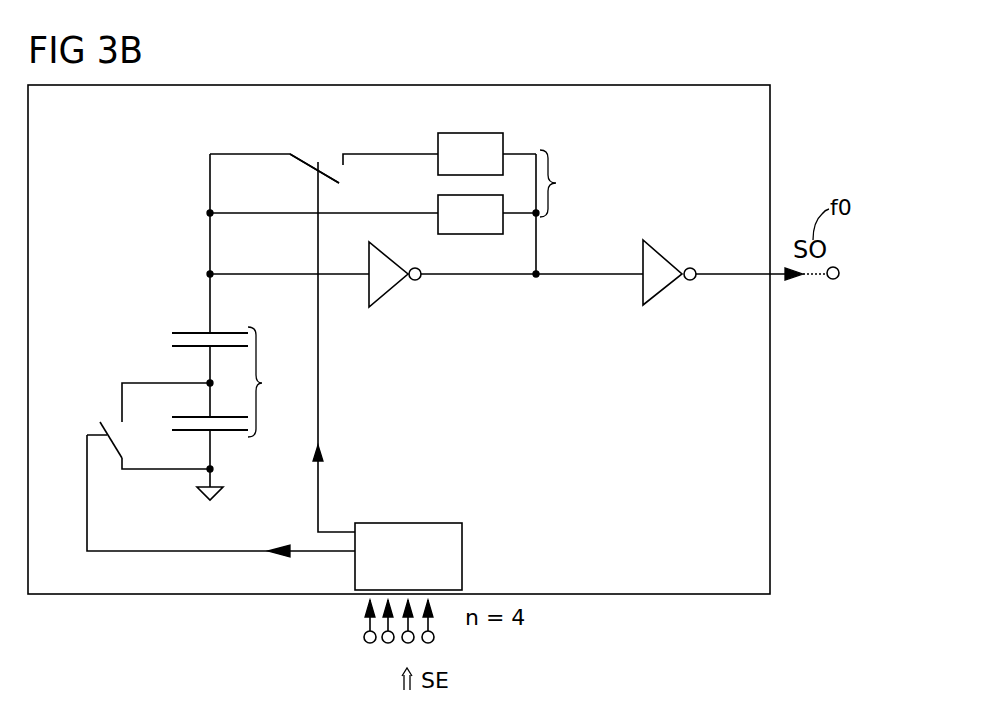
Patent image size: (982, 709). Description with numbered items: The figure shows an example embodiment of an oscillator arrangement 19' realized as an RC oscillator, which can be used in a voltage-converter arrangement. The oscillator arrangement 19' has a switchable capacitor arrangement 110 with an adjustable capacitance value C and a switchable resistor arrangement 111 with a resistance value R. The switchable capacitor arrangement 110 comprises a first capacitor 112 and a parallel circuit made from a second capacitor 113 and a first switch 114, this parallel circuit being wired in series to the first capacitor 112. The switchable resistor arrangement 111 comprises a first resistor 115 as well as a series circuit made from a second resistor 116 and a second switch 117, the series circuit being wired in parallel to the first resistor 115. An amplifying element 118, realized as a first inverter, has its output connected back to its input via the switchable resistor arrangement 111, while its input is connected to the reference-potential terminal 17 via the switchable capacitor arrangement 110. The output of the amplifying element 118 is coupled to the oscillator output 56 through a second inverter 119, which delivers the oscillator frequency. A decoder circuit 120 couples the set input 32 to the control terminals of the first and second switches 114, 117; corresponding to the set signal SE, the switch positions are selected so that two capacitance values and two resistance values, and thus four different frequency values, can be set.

The reference-potential terminal 17 is at (216, 484).
The oscillator arrangement 19' is at (399, 361).
The set input 32 is at (358, 607).
The oscillator output 56 is at (832, 280).
The switchable capacitor arrangement 110 is at (222, 366).
The switchable resistor arrangement 111 is at (629, 187).
The first capacitor 112 is at (188, 331).
The second capacitor 113 is at (190, 417).
The first switch 114 is at (86, 435).
The first resistor 115 is at (438, 210).
The second resistor 116 is at (445, 135).
The second switch 117 is at (314, 174).
The amplifying element 118 is at (387, 297).
The second inverter 119 is at (662, 292).
The decoder circuit 120 is at (465, 551).